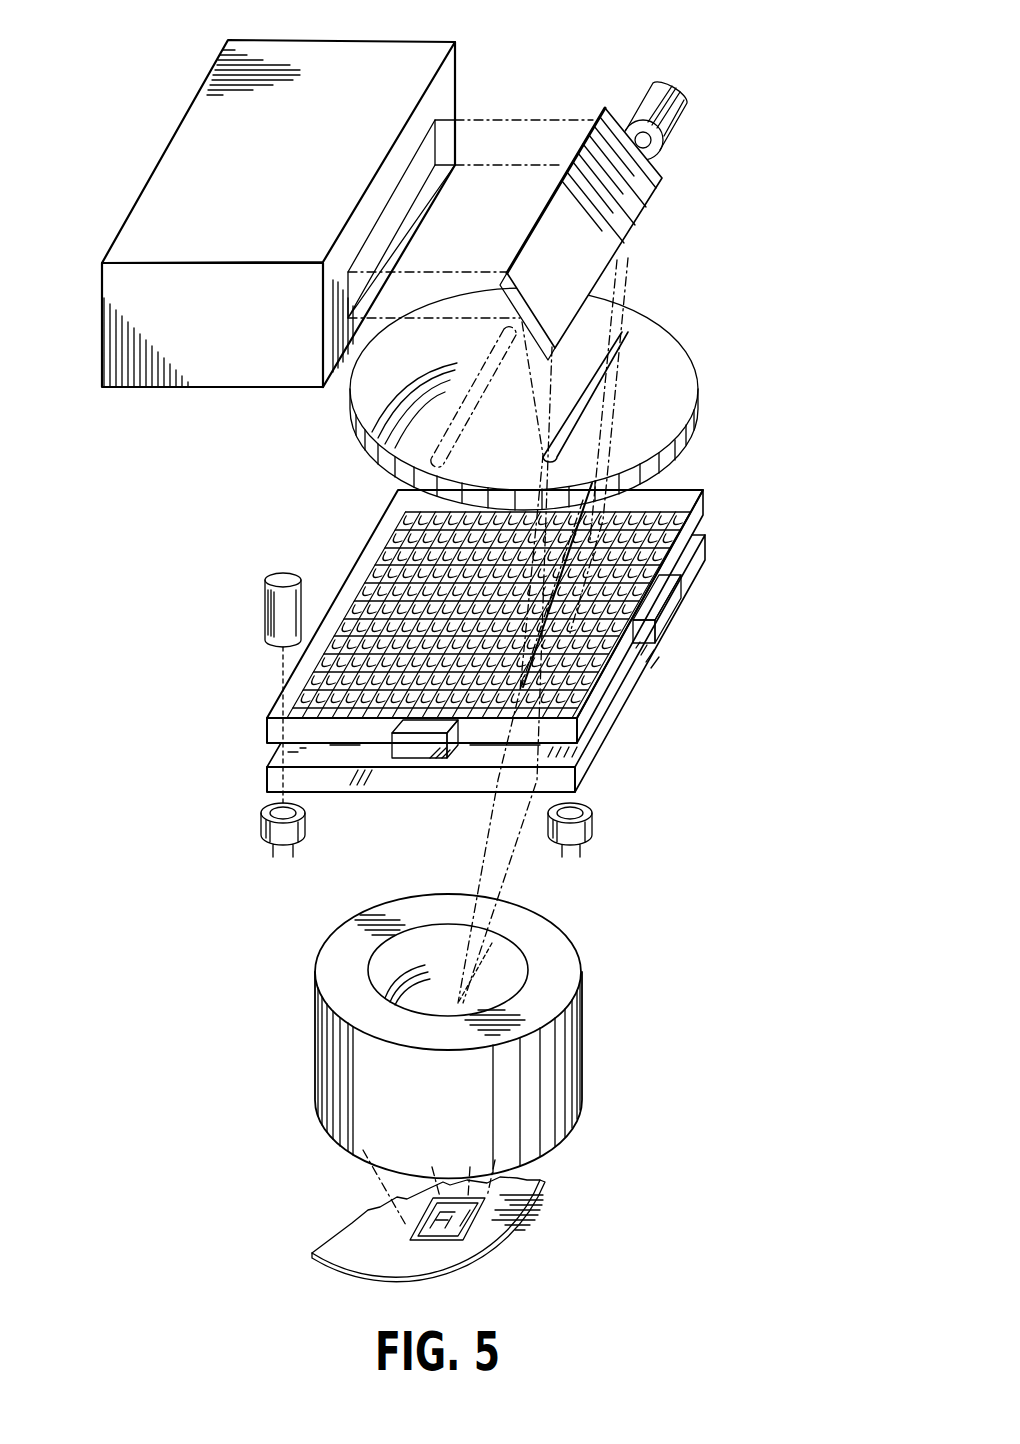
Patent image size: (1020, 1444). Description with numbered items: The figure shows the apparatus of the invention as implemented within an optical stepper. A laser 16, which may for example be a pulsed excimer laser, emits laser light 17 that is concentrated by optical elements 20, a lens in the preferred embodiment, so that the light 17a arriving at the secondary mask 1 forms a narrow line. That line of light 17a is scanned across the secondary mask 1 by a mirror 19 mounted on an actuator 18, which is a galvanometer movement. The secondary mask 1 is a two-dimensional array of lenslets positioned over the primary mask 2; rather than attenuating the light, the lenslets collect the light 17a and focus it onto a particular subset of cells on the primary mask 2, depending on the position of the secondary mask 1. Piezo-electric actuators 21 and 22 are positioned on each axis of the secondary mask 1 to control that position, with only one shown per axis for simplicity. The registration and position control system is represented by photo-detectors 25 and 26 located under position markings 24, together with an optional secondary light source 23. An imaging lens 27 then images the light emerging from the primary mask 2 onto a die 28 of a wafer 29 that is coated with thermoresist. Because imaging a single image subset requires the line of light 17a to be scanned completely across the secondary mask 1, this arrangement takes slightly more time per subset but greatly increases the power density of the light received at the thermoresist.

The secondary mask 1 is at (703, 490).
The primary mask 2 is at (708, 547).
The laser 16 is at (205, 150).
The laser light 17 is at (515, 112).
The light incident on the secondary mask 17a is at (565, 614).
The actuator 18 is at (668, 80).
The mirror 19 is at (664, 180).
The optical elements 20 is at (655, 337).
The piezo-electric actuator 21 is at (683, 620).
The piezo-electric actuator 22 is at (408, 760).
The secondary light source 23 is at (263, 603).
The position markings 24 is at (298, 752).
The photo-detector 25 is at (261, 826).
The photo-detector 26 is at (592, 826).
The imaging lens 27 is at (583, 1010).
The die 28 is at (520, 1184).
The wafer 29 is at (507, 1257).